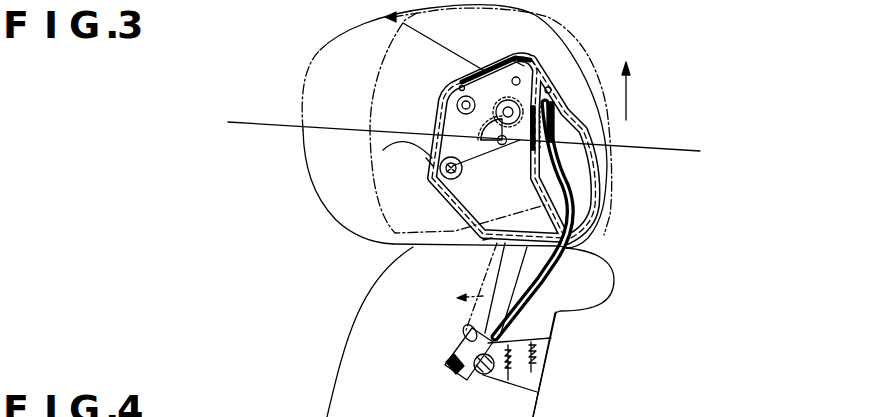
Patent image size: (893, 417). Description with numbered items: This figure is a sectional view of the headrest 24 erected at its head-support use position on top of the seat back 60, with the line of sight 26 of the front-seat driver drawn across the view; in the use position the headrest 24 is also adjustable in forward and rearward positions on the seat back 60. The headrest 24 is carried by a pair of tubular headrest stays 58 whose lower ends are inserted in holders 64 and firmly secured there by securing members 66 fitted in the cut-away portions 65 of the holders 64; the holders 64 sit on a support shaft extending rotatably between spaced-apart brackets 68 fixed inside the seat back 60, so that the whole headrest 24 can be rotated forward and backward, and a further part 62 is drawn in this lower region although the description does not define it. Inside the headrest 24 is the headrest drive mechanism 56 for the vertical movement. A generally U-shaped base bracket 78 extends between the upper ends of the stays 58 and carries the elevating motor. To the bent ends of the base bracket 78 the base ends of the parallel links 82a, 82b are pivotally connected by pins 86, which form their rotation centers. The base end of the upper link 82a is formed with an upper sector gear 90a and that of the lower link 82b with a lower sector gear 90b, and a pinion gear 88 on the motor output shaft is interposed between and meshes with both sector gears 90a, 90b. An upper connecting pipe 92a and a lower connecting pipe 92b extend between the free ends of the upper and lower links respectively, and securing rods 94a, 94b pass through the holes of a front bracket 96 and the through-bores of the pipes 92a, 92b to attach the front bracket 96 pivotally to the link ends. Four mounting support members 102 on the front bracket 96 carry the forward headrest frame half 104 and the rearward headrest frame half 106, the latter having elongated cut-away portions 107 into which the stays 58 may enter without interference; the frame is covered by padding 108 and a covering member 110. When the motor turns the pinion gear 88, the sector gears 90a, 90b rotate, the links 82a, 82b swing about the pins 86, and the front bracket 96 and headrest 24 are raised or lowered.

The headrest 24 is at (589, 50).
The line of sight 26 is at (258, 124).
The headrest drive mechanism 56 is at (357, 263).
The headrest stays 58 is at (567, 257).
The seat back 60 is at (536, 404).
The bolt 62 is at (451, 355).
The holders 64 is at (464, 332).
The cut-away portions 65 is at (457, 375).
The securing members 66 is at (469, 384).
The brackets 68 is at (513, 343).
The base bracket 78 is at (566, 176).
The upper link member 82a is at (492, 70).
The lower link member 82b is at (490, 160).
The pins 86 is at (508, 148).
The pinion gear 88 is at (460, 87).
The upper sector gear 90a is at (521, 81).
The lower sector gear 90b is at (530, 86).
The upper connecting pipe 92a is at (450, 103).
The lower connecting pipe 92b is at (466, 210).
The securing rod 94a is at (492, 110).
The securing rod 94b is at (442, 180).
The front bracket 96 is at (402, 153).
The mounting support members 102 is at (519, 62).
The forward headrest frame half 104 is at (428, 162).
The rearward headrest frame half 106 is at (598, 177).
The cut-away portions 107 is at (490, 270).
The padding 108 is at (380, 63).
The covering member 110 is at (520, 16).